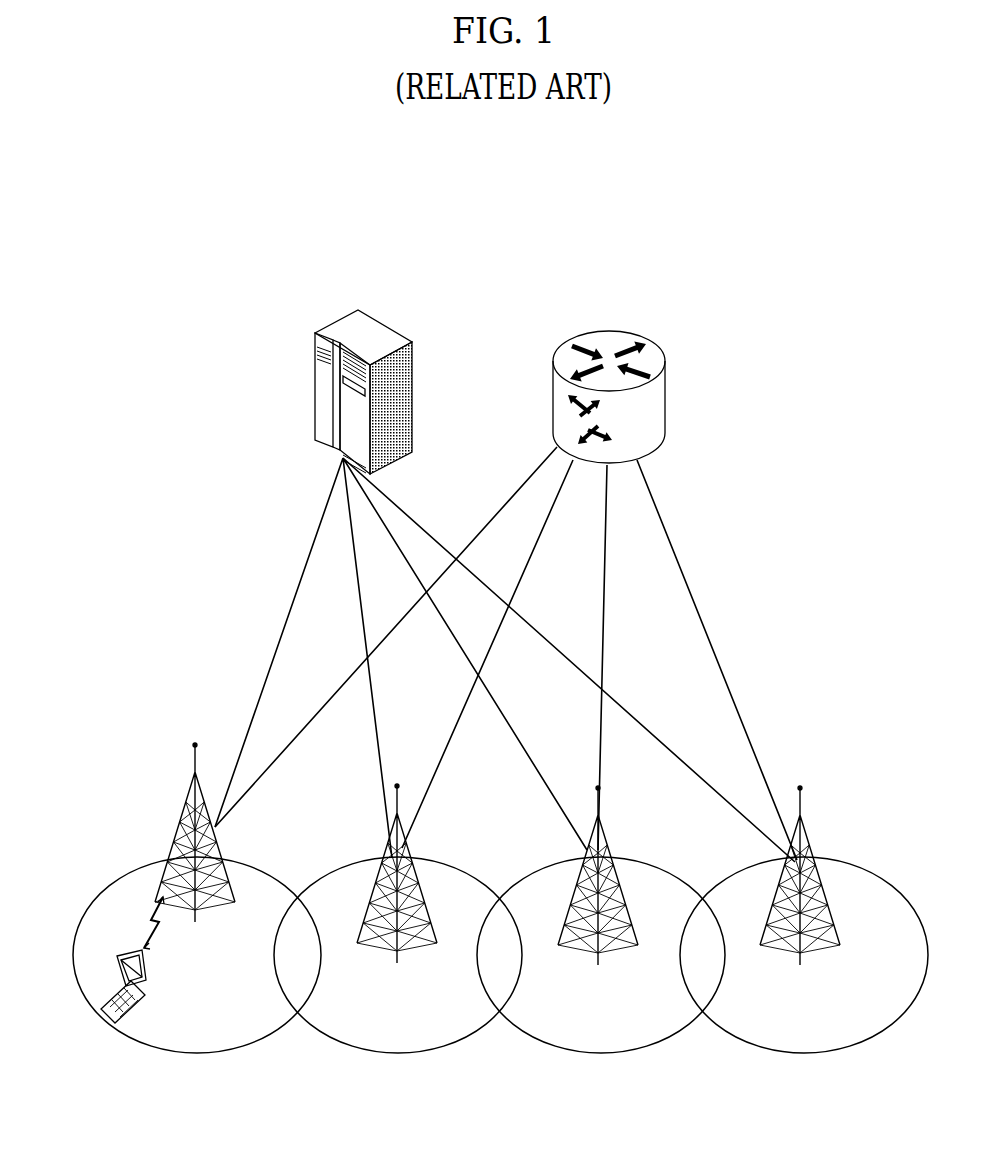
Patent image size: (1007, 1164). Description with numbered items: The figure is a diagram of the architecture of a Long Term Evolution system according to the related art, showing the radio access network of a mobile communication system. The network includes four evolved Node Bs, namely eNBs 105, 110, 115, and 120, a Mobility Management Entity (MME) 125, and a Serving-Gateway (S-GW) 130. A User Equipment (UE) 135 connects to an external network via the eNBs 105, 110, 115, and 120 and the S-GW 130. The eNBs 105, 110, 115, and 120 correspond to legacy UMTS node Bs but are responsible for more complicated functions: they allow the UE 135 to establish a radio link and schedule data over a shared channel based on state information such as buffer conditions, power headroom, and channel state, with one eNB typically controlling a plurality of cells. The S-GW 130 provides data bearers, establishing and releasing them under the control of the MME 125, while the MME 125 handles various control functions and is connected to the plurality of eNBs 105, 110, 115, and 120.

The evolved Node B (eNB) 105 is at (185, 813).
The evolved Node B (eNB) 110 is at (392, 835).
The evolved Node B (eNB) 115 is at (607, 835).
The evolved Node B (eNB) 120 is at (812, 833).
The Mobility Management Entity (MME) 125 is at (347, 330).
The Serving-Gateway (S-GW) 130 is at (605, 337).
The User Equipment (UE) 135 is at (148, 976).